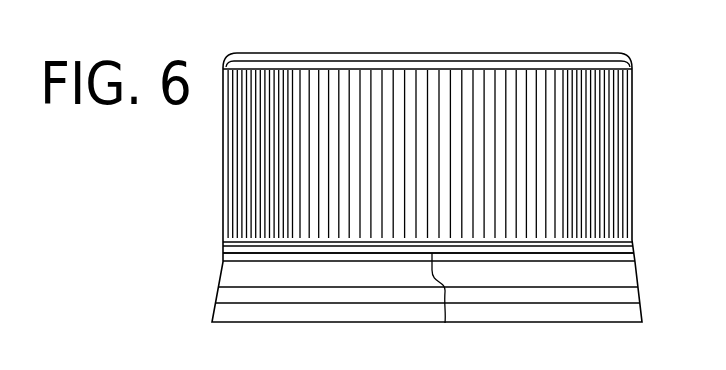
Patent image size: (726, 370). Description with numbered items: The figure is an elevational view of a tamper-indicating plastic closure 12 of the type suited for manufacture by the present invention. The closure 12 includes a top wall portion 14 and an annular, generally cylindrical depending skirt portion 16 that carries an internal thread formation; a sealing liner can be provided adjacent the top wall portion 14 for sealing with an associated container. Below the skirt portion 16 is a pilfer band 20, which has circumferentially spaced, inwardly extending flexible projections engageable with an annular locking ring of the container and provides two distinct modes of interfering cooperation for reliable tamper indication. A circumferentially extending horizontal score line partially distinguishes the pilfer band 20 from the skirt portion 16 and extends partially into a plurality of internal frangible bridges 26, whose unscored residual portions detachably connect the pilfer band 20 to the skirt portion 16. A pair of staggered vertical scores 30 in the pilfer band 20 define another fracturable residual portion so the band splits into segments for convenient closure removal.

The plastic closure 12 is at (640, 88).
The top wall portion 14 is at (503, 61).
The skirt portion 16 is at (222, 158).
The pilfer band 20 is at (648, 240).
The frangible bridges 26 is at (530, 253).
The vertical scores 30 is at (418, 283).